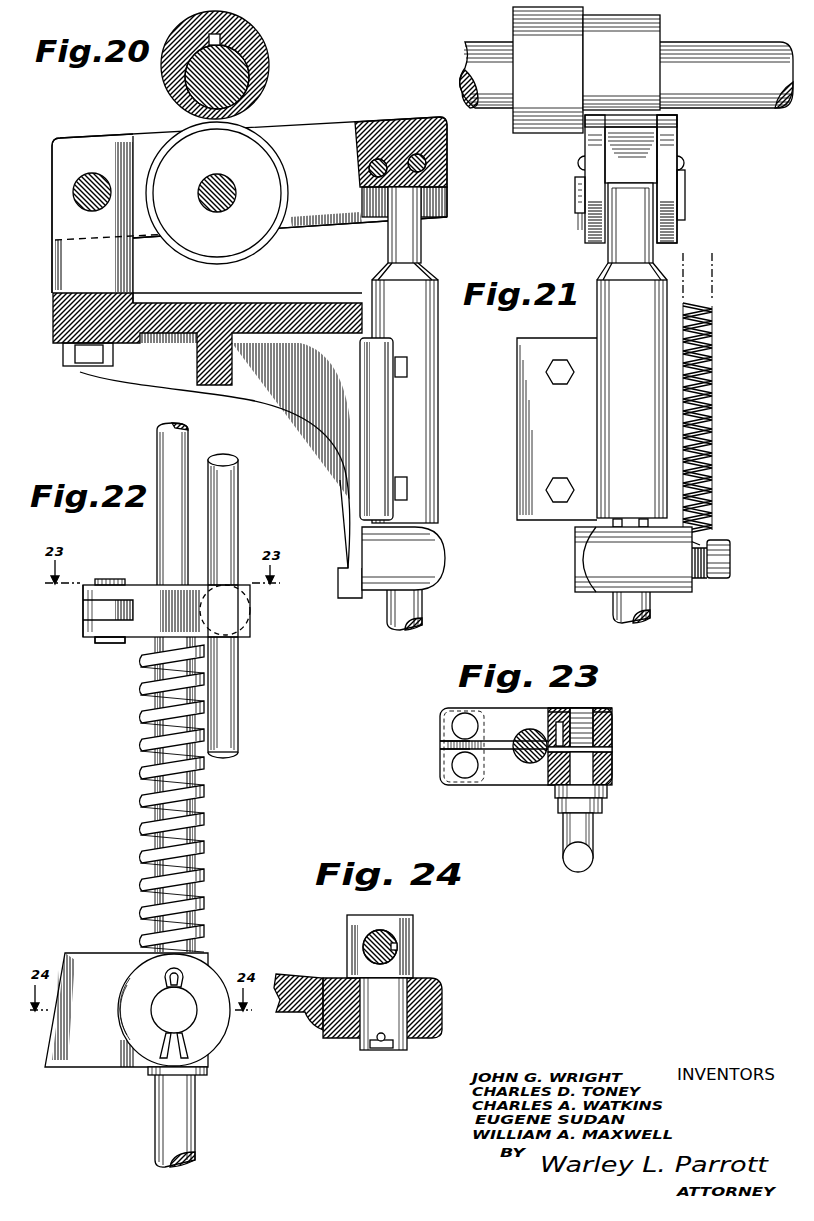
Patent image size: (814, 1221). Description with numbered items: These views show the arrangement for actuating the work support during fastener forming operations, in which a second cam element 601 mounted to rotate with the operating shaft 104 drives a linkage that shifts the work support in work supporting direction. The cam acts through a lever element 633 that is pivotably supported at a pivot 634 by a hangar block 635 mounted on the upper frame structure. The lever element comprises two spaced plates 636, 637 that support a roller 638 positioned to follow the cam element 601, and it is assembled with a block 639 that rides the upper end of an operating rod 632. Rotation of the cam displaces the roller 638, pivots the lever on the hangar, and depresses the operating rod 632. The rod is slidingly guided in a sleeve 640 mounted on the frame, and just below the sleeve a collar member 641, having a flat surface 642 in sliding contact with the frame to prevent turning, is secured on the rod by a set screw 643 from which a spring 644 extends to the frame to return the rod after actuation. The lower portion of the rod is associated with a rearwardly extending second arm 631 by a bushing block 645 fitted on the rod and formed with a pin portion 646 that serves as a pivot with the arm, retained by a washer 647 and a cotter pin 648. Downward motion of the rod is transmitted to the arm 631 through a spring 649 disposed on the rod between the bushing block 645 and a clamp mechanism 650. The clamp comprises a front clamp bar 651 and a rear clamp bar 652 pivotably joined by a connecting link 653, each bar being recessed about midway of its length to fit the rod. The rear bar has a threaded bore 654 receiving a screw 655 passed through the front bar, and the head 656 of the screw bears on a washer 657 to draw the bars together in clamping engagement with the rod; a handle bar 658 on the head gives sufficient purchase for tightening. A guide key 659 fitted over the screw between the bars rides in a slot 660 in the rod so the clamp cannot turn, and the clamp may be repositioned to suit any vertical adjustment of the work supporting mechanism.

In FIG. 20, the operating shaft 104 is at (240, 88).
In FIG. 21, the operating shaft 104 is at (758, 45).
In FIG. 20, the second cam element 601 is at (268, 62).
In FIG. 21, the second cam element 601 is at (660, 22).
In FIG. 22, the second arm 631 is at (72, 1068).
In FIG. 24, the second arm 631 is at (320, 1013).
In FIG. 20, the operating rod 632 is at (421, 247).
In FIG. 21, the operating rod 632 is at (613, 607).
In FIG. 22, the operating rod 632 is at (170, 1125).
In FIG. 23, the operating rod 632 is at (528, 766).
In FIG. 24, the operating rod 632 is at (362, 947).
In FIG. 20, the lever element 633 is at (286, 128).
In FIG. 21, the lever element 633 is at (578, 182).
In FIG. 20, the pivot 634 is at (88, 173).
In FIG. 20, the hangar block 635 is at (66, 140).
In FIG. 21, the plate 636 is at (590, 152).
In FIG. 20, the plate 637 is at (330, 226).
In FIG. 21, the plate 637 is at (680, 148).
In FIG. 20, the roller 638 is at (178, 128).
In FIG. 20, the block 639 is at (378, 120).
In FIG. 21, the block 639 is at (677, 128).
In FIG. 20, the sleeve 640 is at (438, 336).
In FIG. 21, the sleeve 640 is at (600, 327).
In FIG. 20, the collar member 641 is at (445, 545).
In FIG. 21, the collar member 641 is at (665, 590).
In FIG. 20, the flat surface 642 is at (348, 550).
In FIG. 21, the set screw 643 is at (730, 570).
In FIG. 21, the spring 644 is at (712, 425).
In FIG. 22, the bushing block 645 is at (198, 1076).
In FIG. 24, the bushing block 645 is at (412, 928).
In FIG. 22, the pin portion 646 is at (160, 998).
In FIG. 24, the pin portion 646 is at (390, 1052).
In FIG. 22, the washer 647 is at (228, 1035).
In FIG. 24, the washer 647 is at (442, 1035).
In FIG. 22, the cotter pin 648 is at (160, 1042).
In FIG. 24, the cotter pin 648 is at (372, 1050).
In FIG. 22, the spring 649 is at (142, 771).
In FIG. 22, the clamp mechanism 650 is at (257, 631).
In FIG. 23, the clamp mechanism 650 is at (466, 792).
In FIG. 22, the front clamp bar 651 is at (128, 642).
In FIG. 23, the front clamp bar 651 is at (612, 768).
In FIG. 23, the rear clamp bar 652 is at (612, 735).
In FIG. 22, the connecting link 653 is at (83, 610).
In FIG. 23, the connecting link 653 is at (447, 745).
In FIG. 23, the threaded bore 654 is at (612, 722).
In FIG. 23, the screw 655 is at (585, 710).
In FIG. 22, the head 656 is at (250, 598).
In FIG. 23, the head 656 is at (603, 810).
In FIG. 22, the washer 657 is at (250, 622).
In FIG. 23, the washer 657 is at (607, 792).
In FIG. 22, the handle bar 658 is at (238, 694).
In FIG. 23, the handle bar 658 is at (565, 828).
In FIG. 23, the guide key 659 is at (612, 749).
In FIG. 23, the slot 660 is at (556, 728).